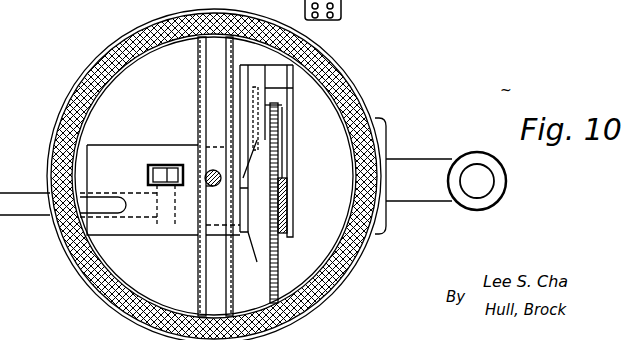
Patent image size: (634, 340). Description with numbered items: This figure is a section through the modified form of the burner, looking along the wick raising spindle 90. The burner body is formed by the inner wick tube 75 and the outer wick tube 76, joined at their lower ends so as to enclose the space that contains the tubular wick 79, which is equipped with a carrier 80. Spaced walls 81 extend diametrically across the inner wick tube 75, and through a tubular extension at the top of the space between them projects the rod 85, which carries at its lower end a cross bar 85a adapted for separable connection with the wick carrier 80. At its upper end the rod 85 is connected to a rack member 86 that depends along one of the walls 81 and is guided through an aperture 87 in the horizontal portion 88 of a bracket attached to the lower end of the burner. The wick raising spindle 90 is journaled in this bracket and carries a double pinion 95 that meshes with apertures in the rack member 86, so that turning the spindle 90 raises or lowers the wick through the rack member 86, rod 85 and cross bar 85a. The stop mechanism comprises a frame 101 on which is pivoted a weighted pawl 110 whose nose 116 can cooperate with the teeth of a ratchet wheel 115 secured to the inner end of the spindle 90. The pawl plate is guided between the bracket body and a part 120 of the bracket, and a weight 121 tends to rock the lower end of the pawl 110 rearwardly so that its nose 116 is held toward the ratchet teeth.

The outer wick tube 76 is at (149, 31).
The inner wick tube 75 is at (113, 79).
The tubular wick 79 is at (347, 80).
The wick carrier 80 is at (370, 106).
The walls 81 is at (197, 80).
The cross bar 85a is at (216, 110).
The rod 85 is at (206, 186).
The rack member 86 is at (170, 165).
The aperture 87 is at (158, 165).
The horizontal portion 88 is at (110, 145).
The wick raising spindle 90 is at (37, 216).
The pinion 95 is at (142, 236).
The frame 101 is at (288, 203).
The weighted pawl 110 is at (290, 150).
The ratchet wheel 115 is at (278, 248).
The nose 116 is at (286, 104).
The part 120 is at (290, 133).
The weight 121 is at (258, 72).